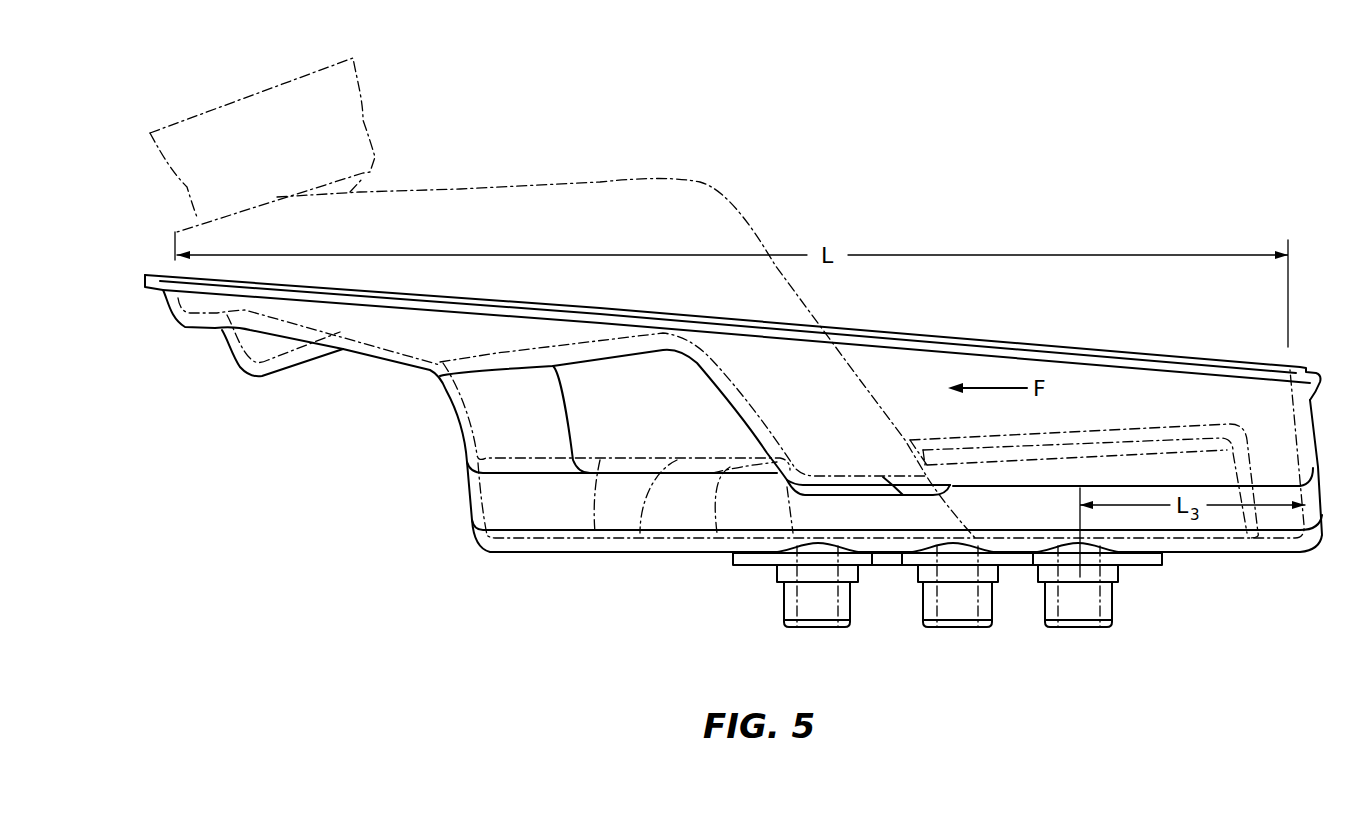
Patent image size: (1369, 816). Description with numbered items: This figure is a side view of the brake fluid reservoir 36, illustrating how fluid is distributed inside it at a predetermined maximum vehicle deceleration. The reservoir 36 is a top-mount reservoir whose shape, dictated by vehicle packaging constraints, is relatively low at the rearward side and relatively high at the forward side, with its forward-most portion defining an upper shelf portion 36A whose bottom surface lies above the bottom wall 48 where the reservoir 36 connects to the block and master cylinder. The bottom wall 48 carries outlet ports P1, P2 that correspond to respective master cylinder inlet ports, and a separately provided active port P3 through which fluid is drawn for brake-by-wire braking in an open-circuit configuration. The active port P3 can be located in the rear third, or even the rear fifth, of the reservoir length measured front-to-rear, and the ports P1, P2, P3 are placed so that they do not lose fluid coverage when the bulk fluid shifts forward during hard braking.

The reservoir 36 is at (583, 146).
The upper shelf portion 36A is at (266, 390).
The bottom wall 48 is at (1185, 555).
The outlet port P1 is at (938, 593).
The outlet port P2 is at (800, 593).
The active port P3 is at (1060, 593).